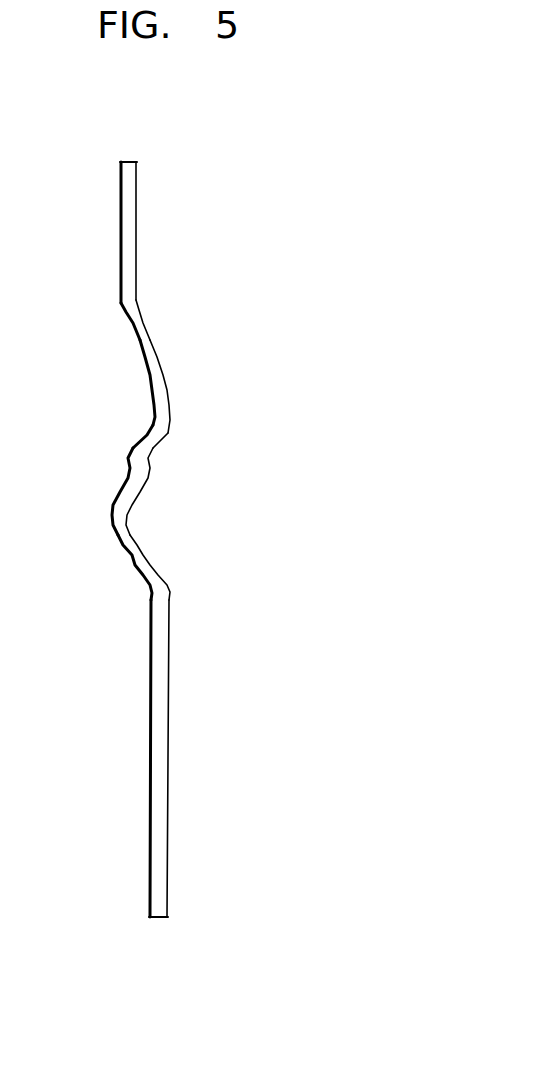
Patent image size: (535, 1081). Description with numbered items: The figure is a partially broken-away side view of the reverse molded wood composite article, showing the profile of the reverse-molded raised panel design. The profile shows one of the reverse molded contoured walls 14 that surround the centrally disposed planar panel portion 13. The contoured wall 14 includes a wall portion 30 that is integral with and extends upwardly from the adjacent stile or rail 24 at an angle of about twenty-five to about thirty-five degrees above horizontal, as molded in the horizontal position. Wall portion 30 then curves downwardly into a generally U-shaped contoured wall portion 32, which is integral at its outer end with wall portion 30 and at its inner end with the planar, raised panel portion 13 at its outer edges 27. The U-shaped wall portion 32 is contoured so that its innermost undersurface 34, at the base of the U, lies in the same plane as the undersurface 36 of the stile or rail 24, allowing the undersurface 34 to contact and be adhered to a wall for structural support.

The planar panel portion 13 is at (128, 217).
The outer edges 27 is at (122, 312).
The U-shaped contoured wall portion 32 is at (160, 405).
The innermost undersurface 34 is at (170, 435).
The contoured walls 14 is at (113, 525).
The wall portion 30 is at (133, 548).
The stile or rail 24 is at (158, 755).
The undersurface 36 is at (168, 813).